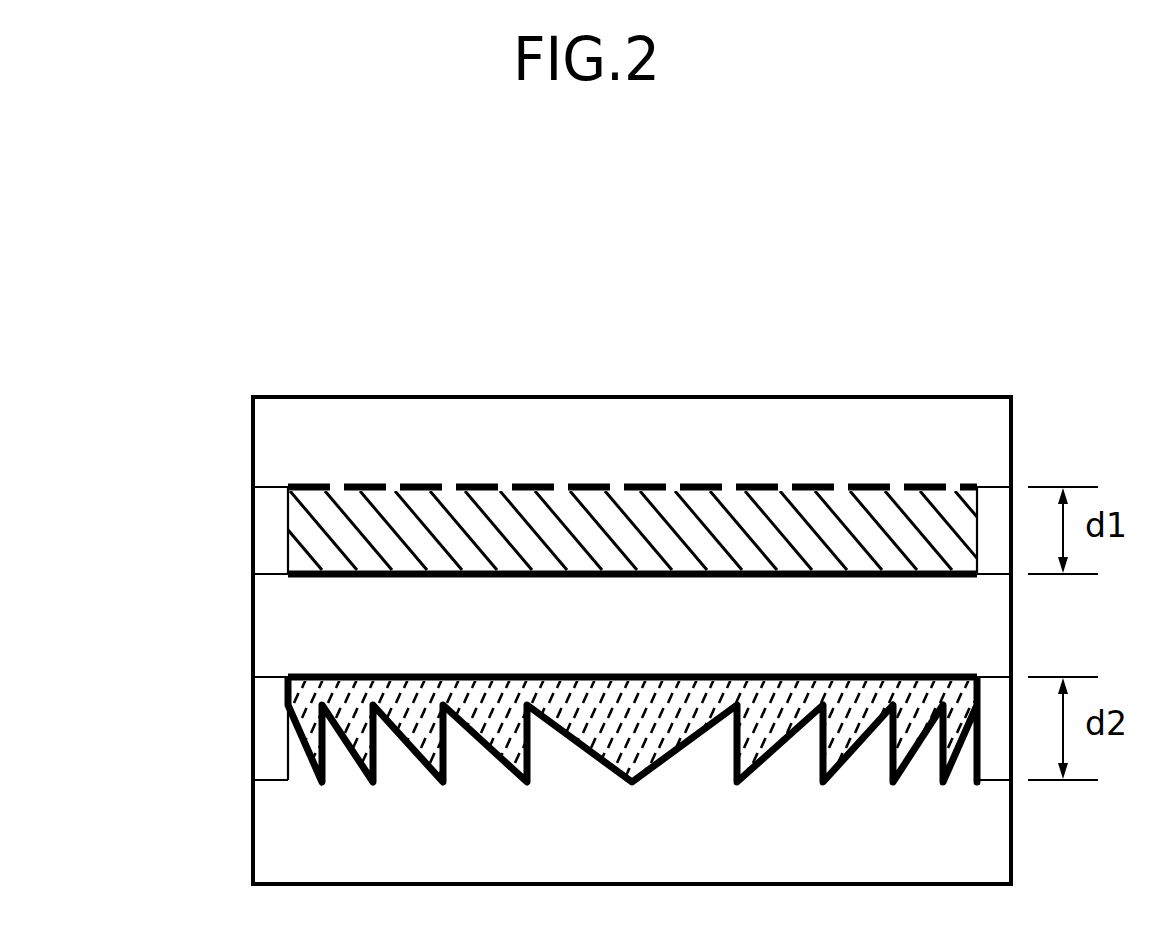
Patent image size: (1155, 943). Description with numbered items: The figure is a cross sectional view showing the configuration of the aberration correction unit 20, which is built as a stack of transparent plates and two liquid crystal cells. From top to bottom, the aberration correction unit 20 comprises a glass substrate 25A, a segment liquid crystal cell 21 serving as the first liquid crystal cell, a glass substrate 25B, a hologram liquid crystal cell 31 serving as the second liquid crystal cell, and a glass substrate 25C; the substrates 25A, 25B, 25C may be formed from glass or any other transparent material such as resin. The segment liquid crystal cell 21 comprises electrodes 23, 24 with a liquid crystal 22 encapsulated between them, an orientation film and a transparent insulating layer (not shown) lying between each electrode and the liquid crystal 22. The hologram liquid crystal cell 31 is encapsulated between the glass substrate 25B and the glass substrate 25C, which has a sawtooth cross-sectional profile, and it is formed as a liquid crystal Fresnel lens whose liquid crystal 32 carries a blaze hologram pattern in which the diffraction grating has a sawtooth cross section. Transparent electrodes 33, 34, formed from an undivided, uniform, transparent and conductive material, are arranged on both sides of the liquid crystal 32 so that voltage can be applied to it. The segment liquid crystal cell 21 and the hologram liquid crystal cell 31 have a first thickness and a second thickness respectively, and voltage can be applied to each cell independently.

The aberration correction unit 20 is at (966, 319).
The segment liquid crystal cell 21 is at (221, 487).
The liquid crystal 22 is at (657, 538).
The electrode 23 is at (792, 484).
The electrode 24 is at (871, 576).
The glass substrate 25A is at (976, 431).
The glass substrate 25B is at (976, 623).
The glass substrate 25C is at (976, 831).
The hologram liquid crystal cell 31 is at (221, 678).
The liquid crystal 32 is at (632, 786).
The transparent electrode 33 is at (792, 673).
The transparent electrode 34 is at (772, 757).